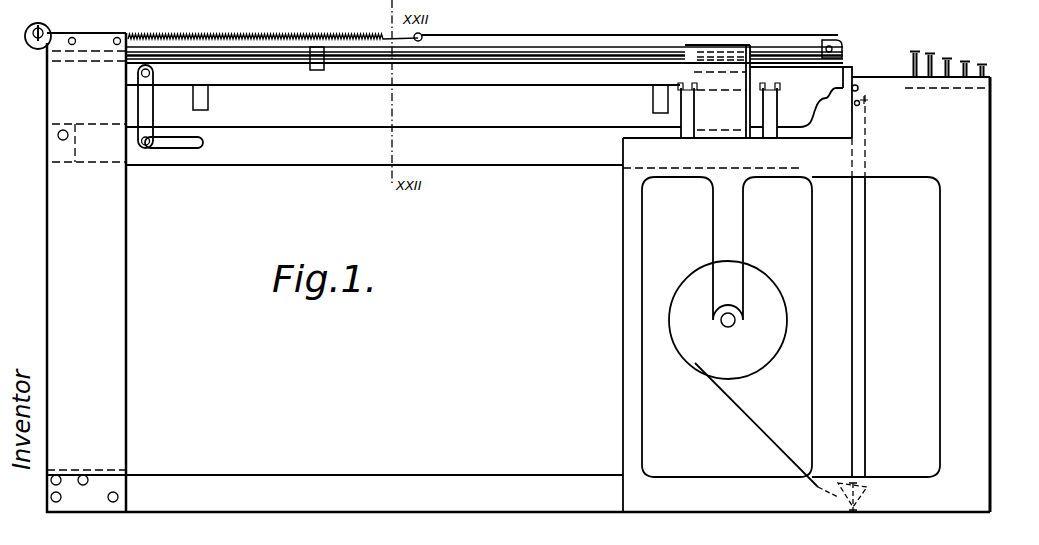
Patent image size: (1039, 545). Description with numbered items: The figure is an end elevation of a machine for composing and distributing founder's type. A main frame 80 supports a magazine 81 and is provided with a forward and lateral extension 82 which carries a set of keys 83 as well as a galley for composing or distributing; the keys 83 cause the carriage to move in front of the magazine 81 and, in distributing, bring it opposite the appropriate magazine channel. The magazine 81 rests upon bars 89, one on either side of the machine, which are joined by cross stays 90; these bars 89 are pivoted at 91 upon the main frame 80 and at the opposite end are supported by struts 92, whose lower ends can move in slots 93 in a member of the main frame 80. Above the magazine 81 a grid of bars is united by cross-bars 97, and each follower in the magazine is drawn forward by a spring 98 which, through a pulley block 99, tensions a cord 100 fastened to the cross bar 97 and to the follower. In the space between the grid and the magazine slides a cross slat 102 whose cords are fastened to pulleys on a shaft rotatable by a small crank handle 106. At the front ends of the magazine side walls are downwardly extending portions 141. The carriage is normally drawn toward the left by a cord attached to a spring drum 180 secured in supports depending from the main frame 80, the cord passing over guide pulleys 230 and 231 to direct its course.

The main frame 80 is at (518, 272).
The magazine 81 is at (185, 58).
The forward and lateral extension 82 is at (985, 273).
The keys 83 is at (943, 58).
The bars 89 is at (337, 84).
The cross stays 90 is at (208, 109).
The pivot 91 is at (737, 91).
The struts 92 is at (150, 103).
The slots 93 is at (205, 143).
The cross-bars 97 is at (838, 44).
The spring 98 is at (309, 36).
The pulley block 99 is at (427, 34).
The cord 100 is at (591, 36).
The cross slat 102 is at (848, 62).
The crank handle 106 is at (25, 31).
The downwardly extending portions 141 is at (857, 77).
The spring drum 180 is at (700, 356).
The guide pulley 230 is at (868, 102).
The guide pulley 231 is at (863, 490).